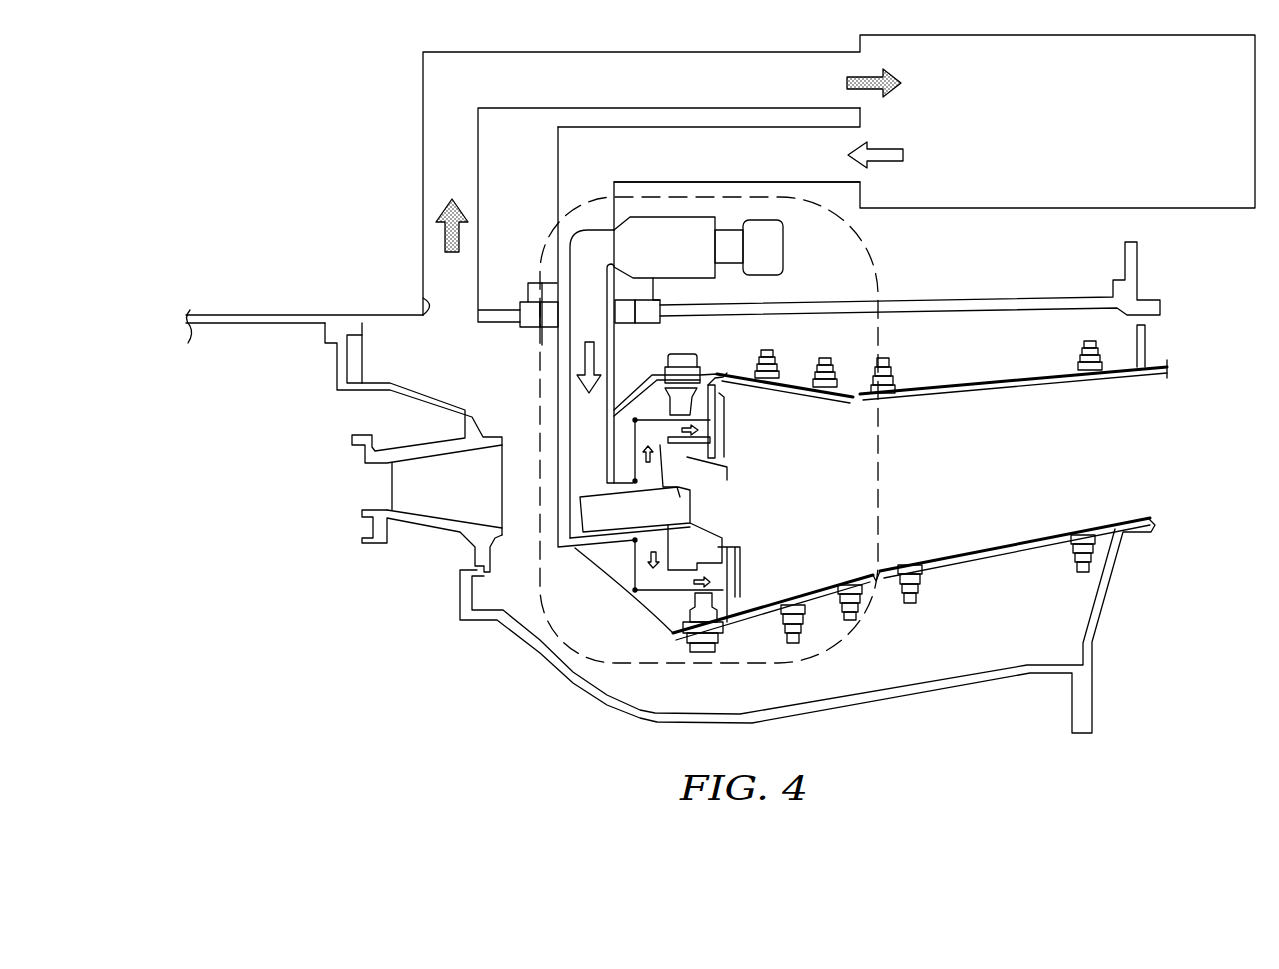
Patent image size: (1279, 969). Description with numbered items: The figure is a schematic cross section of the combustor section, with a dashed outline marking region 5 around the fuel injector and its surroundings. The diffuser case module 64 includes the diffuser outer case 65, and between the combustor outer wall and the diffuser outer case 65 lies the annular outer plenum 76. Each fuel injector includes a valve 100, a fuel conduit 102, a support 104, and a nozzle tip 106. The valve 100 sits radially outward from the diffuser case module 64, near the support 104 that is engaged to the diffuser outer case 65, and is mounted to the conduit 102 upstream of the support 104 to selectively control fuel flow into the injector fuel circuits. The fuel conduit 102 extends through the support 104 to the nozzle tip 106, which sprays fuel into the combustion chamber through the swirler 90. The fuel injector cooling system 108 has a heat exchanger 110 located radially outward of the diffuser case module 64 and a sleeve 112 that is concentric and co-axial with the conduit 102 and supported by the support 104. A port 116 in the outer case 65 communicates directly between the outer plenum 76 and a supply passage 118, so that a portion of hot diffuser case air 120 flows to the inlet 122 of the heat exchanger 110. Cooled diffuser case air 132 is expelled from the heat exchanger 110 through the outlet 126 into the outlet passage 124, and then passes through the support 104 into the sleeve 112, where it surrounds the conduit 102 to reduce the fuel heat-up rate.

The fuel injector cooling system 108 is at (300, 79).
The supply passage 118 is at (423, 119).
The port 116 is at (423, 299).
The heat exchanger outlet 126 is at (850, 190).
The outlet passage 124 is at (812, 186).
The hot diffuser case air 120 is at (441, 232).
The inlet 122 is at (901, 83).
The cooled diffuser case air 132 is at (893, 157).
The heat exchanger 110 is at (1082, 186).
The diffuser outer case 65 is at (380, 312).
The outer plenum 76 is at (412, 366).
The sleeve 112 is at (557, 521).
The support 104 is at (548, 283).
The fuel conduit 102 is at (569, 362).
The valve 100 is at (692, 259).
The diffuser case module 64 is at (960, 300).
The swirler 90 is at (727, 474).
The nozzle tip 106 is at (692, 507).
The combustor section 5 is at (886, 460).